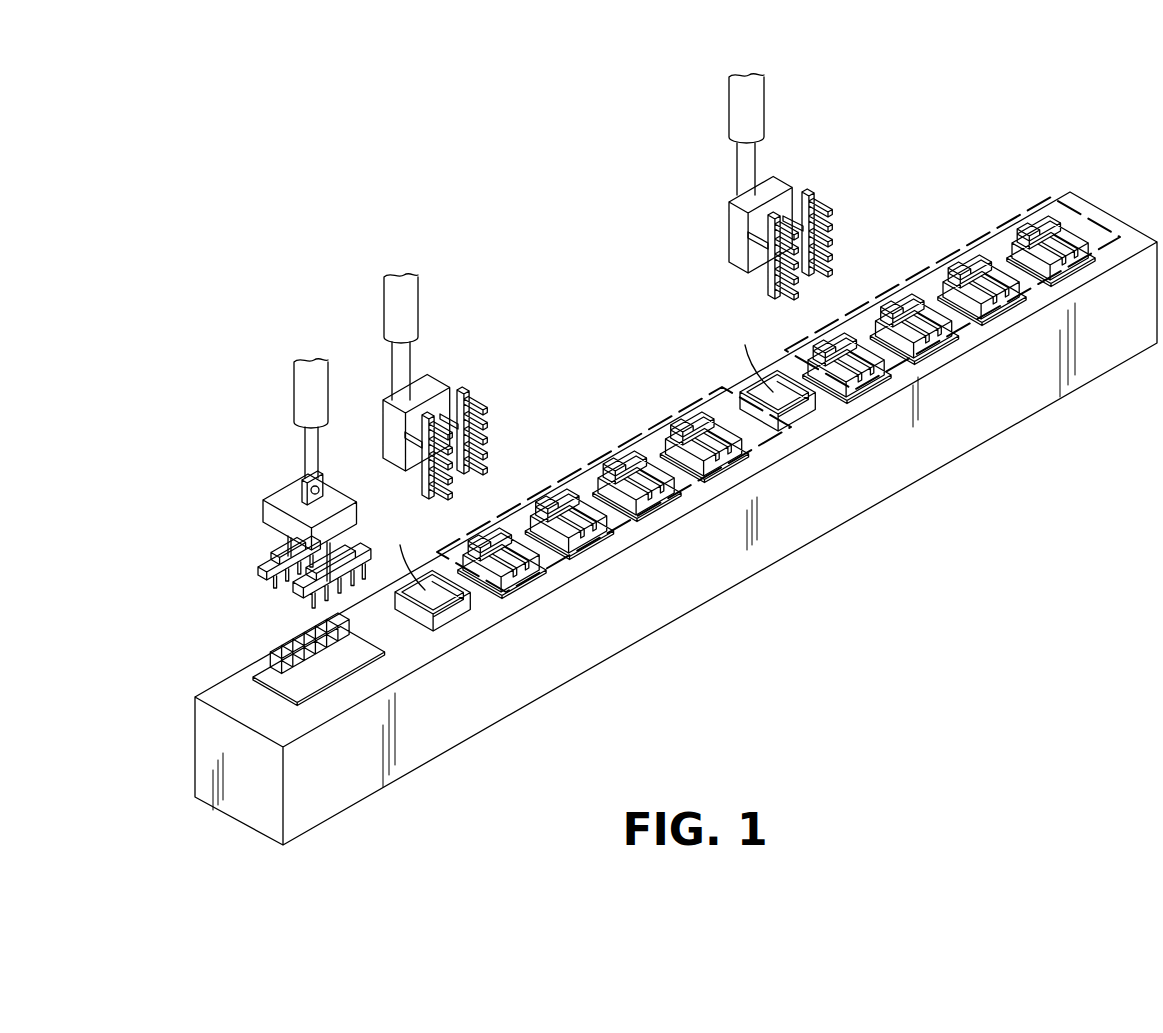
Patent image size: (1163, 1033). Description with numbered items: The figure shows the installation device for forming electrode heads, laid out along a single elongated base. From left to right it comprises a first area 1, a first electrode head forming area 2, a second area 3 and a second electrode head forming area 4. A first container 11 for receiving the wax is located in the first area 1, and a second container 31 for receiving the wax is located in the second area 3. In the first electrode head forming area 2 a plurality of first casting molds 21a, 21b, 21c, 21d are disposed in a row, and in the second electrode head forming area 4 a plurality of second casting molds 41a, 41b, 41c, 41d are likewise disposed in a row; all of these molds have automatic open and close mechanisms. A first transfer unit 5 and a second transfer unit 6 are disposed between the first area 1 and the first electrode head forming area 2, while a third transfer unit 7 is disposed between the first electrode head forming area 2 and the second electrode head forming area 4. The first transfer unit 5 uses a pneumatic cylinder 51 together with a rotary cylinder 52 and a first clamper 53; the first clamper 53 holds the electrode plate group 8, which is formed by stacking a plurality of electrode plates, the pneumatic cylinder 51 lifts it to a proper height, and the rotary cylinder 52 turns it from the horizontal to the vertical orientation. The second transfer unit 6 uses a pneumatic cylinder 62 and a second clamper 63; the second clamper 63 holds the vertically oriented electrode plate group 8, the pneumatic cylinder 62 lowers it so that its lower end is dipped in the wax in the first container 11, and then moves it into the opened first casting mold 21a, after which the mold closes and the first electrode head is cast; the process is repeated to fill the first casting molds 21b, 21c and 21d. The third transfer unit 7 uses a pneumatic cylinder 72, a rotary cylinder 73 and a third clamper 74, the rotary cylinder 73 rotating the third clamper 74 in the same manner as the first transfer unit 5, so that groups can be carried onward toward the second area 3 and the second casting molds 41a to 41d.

The first area 1 is at (478, 620).
The first container 11 is at (445, 620).
The first electrode head forming area 2 is at (614, 501).
The first casting mold 21a is at (523, 552).
The first casting mold 21b is at (573, 507).
The first casting mold 21c is at (643, 467).
The first casting mold 21d is at (707, 430).
The second area 3 is at (841, 432).
The second container 31 is at (788, 420).
The second electrode head forming area 4 is at (958, 275).
The second casting mold 41a is at (843, 330).
The second casting mold 41b is at (910, 298).
The second casting mold 41c is at (980, 260).
The second casting mold 41d is at (1073, 232).
The first transfer unit 5 is at (278, 454).
The pneumatic cylinder 51 is at (305, 365).
The rotary cylinder 52 is at (279, 495).
The first clamper 53 is at (260, 565).
The second transfer unit 6 is at (432, 380).
The pneumatic cylinder 62 is at (417, 305).
The second clamper 63 is at (487, 408).
The third transfer unit 7 is at (749, 183).
The pneumatic cylinder 72 is at (762, 105).
The rotary cylinder 73 is at (733, 226).
The third clamper 74 is at (775, 283).
The electrode plate group 8 is at (285, 650).